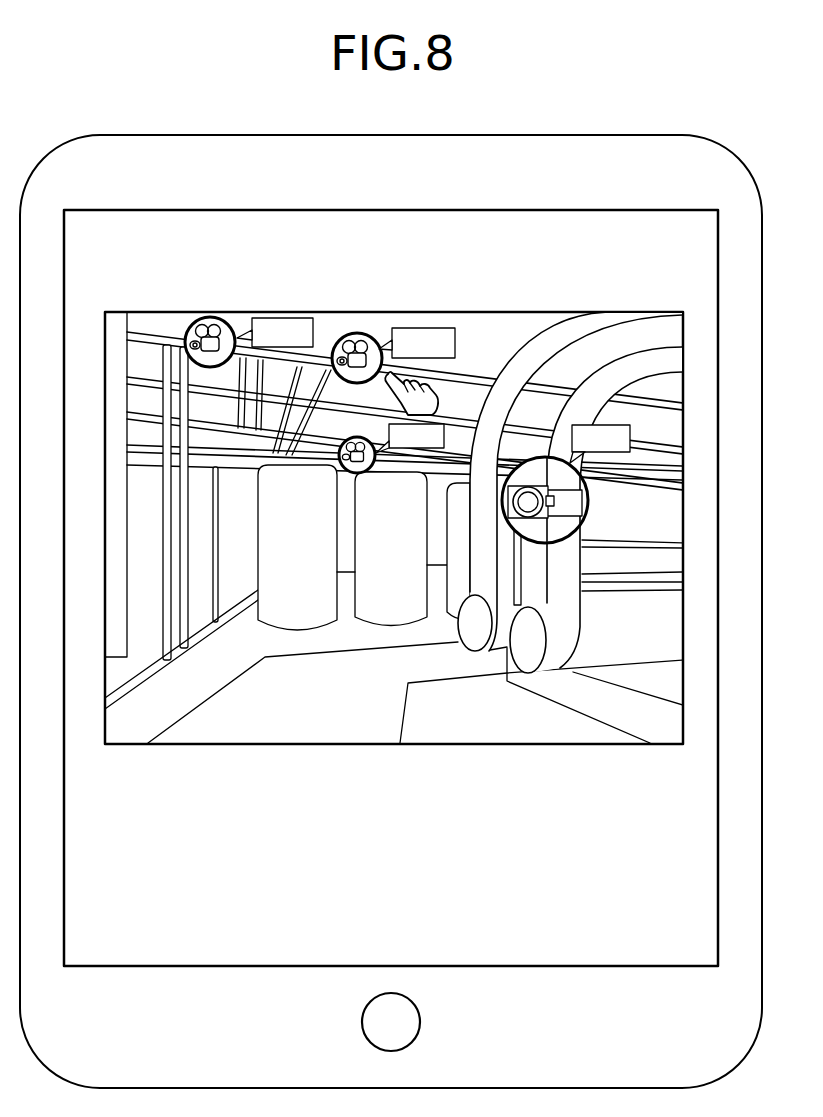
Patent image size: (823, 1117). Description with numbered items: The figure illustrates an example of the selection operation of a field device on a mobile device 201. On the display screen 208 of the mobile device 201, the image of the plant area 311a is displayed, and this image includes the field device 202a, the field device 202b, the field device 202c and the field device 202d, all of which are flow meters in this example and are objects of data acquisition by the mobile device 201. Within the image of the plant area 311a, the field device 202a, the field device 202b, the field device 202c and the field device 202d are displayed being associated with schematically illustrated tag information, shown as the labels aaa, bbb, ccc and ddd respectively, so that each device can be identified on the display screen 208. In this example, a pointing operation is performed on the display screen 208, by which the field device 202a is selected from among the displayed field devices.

The mobile device 201 is at (597, 135).
The display screen 208 is at (597, 210).
The image of the plant area 311a is at (394, 512).
The field device 202a is at (357, 373).
The field device 202b is at (210, 358).
The field device 202c is at (359, 472).
The field device 202d is at (545, 516).